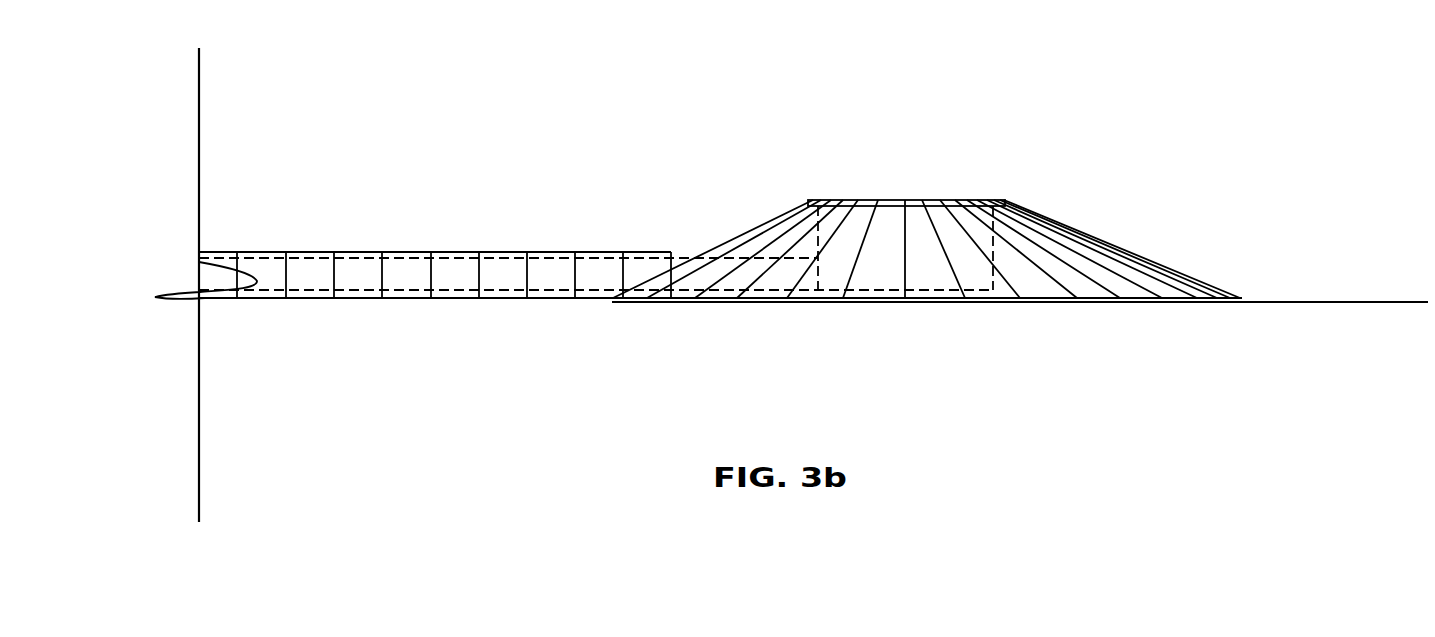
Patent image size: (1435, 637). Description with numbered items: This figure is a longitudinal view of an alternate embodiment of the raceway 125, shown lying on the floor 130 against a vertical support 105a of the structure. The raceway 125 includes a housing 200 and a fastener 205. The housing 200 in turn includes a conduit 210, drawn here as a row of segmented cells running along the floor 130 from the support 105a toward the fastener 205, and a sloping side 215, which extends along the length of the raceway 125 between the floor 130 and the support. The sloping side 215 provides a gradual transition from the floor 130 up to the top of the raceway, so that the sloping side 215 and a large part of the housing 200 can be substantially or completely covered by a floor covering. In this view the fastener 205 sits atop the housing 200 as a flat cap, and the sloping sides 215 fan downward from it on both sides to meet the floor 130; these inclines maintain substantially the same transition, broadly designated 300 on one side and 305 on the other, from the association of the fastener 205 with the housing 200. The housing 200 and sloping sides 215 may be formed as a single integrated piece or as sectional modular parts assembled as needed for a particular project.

The wall / vertical support surface 105a is at (199, 128).
The conduit 210 is at (365, 268).
The housing 200 is at (603, 224).
The sloping side 215 is at (1035, 280).
The floor 130 is at (1360, 301).
The fastener 205 is at (822, 201).
The transition 300 is at (807, 199).
The raceway 125 is at (985, 111).
The transition 305 is at (1238, 296).